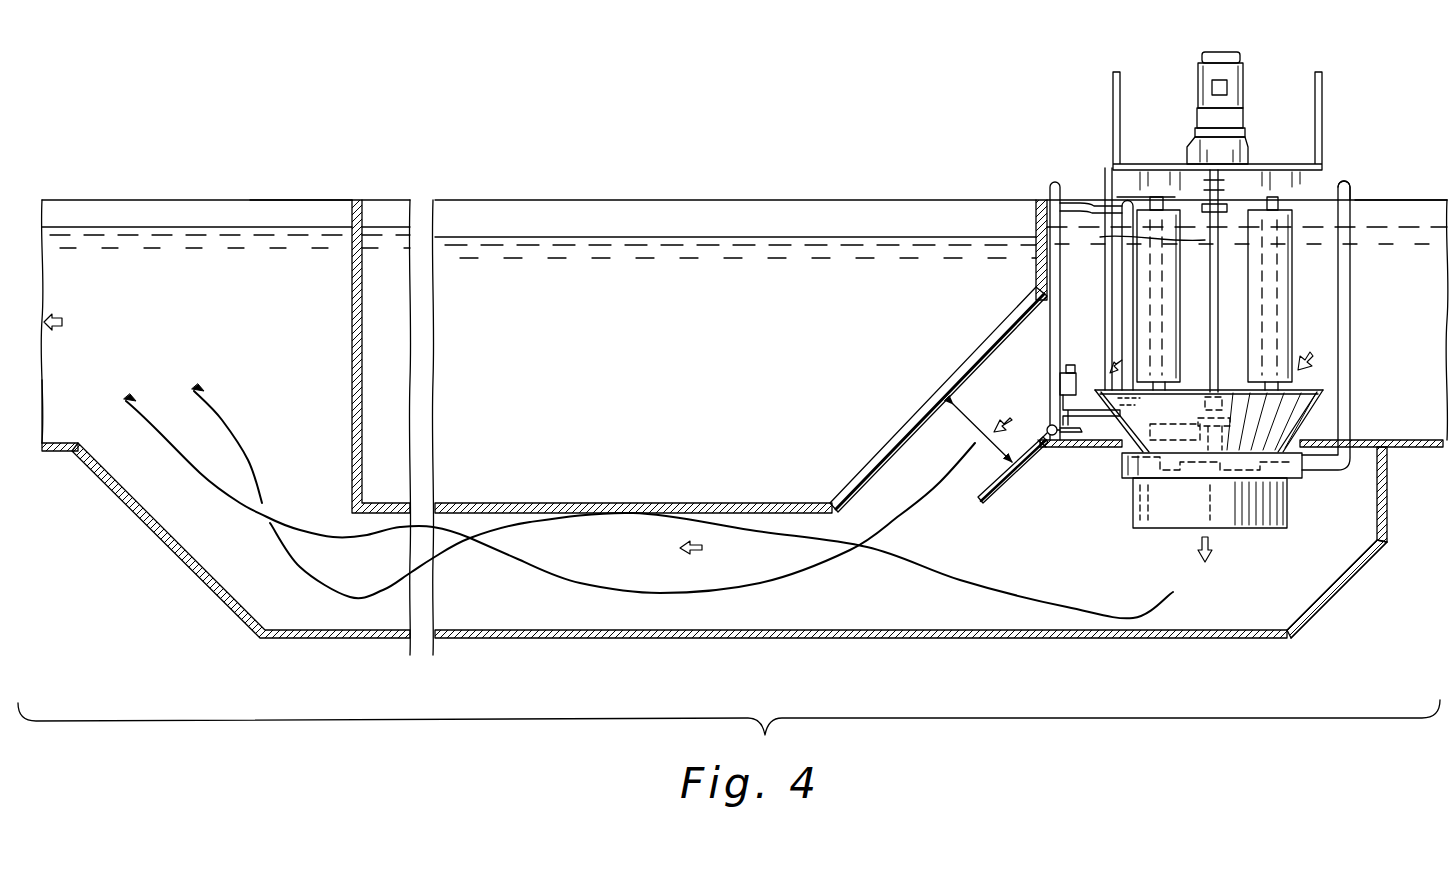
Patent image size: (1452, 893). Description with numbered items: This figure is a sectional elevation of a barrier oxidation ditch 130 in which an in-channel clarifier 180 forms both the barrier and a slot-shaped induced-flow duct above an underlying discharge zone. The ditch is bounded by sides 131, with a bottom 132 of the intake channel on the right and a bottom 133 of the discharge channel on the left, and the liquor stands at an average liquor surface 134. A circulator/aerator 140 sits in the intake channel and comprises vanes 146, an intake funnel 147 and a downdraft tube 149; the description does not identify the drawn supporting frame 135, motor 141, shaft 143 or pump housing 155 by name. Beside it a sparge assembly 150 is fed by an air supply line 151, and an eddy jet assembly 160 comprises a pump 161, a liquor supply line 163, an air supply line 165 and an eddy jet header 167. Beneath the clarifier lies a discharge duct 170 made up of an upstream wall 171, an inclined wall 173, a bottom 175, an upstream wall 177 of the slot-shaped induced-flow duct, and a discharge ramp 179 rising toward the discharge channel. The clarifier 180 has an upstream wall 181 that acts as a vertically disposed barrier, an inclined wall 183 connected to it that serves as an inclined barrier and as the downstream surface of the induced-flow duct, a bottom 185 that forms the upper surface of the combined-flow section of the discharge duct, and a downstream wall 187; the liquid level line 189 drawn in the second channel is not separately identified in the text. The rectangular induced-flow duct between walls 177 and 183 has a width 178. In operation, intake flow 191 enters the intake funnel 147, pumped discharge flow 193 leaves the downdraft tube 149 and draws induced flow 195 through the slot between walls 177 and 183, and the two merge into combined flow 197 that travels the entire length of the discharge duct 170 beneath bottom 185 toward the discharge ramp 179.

The barrier oxidation ditch 130 is at (212, 190).
The sides 131 is at (1395, 200).
The bottom of the intake channel 132 is at (1372, 442).
The bottom of the discharge channel 133 is at (62, 440).
The average liquor surface 134 is at (310, 228).
The support frame 135 is at (1287, 167).
The circulator/aerator 140 is at (1214, 90).
The motor 141 is at (1243, 72).
The drive shaft 143 is at (1102, 238).
The vanes 146 is at (1150, 270).
The intake funnel 147 is at (1317, 405).
The downdraft tube 149 is at (1282, 502).
The sparge assembly 150 is at (1357, 163).
The air supply line 151 is at (1350, 262).
The pump flange housing 155 is at (1126, 480).
The eddy jet assembly 160 is at (1067, 358).
The pump 161 is at (1076, 375).
The liquor supply line 163 is at (1090, 205).
The air supply line 165 is at (1054, 182).
The eddy jet header 167 is at (1050, 425).
The discharge duct 170 is at (1343, 596).
The upstream wall 171 is at (1386, 492).
The inclined wall 173 is at (1340, 574).
The bottom 175 is at (1207, 628).
The upstream wall of the slot-shaped induced-flow duct 177 is at (1005, 487).
The width 178 is at (990, 418).
The discharge ramp 179 is at (204, 575).
The in-channel clarifier 180 is at (812, 193).
The upstream wall 181 is at (1040, 235).
The inclined wall 183 is at (884, 454).
The bottom 185 is at (643, 503).
The downstream wall 187 is at (350, 412).
The liquid level 189 is at (878, 232).
The intake flow 191 is at (1310, 354).
The pumped discharge flow 193 is at (1197, 550).
The induced flow 195 is at (1042, 444).
The combined flow 197 is at (698, 552).